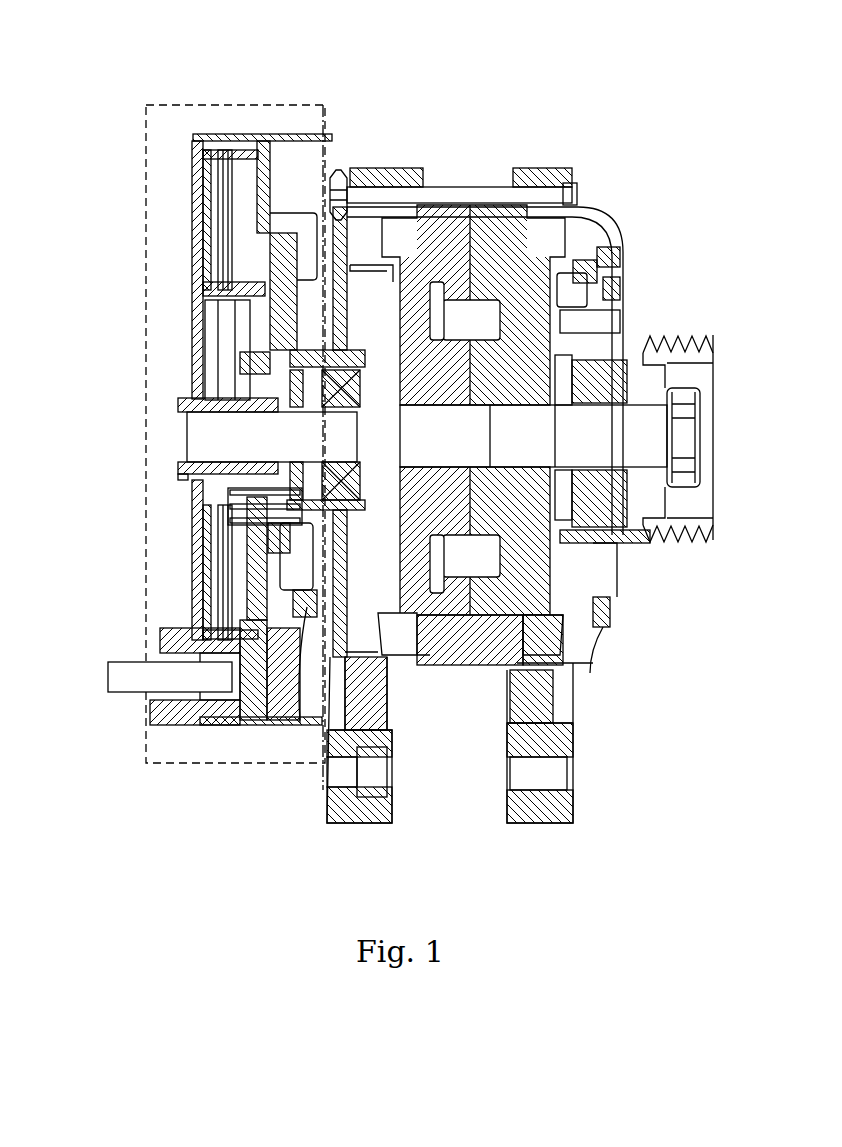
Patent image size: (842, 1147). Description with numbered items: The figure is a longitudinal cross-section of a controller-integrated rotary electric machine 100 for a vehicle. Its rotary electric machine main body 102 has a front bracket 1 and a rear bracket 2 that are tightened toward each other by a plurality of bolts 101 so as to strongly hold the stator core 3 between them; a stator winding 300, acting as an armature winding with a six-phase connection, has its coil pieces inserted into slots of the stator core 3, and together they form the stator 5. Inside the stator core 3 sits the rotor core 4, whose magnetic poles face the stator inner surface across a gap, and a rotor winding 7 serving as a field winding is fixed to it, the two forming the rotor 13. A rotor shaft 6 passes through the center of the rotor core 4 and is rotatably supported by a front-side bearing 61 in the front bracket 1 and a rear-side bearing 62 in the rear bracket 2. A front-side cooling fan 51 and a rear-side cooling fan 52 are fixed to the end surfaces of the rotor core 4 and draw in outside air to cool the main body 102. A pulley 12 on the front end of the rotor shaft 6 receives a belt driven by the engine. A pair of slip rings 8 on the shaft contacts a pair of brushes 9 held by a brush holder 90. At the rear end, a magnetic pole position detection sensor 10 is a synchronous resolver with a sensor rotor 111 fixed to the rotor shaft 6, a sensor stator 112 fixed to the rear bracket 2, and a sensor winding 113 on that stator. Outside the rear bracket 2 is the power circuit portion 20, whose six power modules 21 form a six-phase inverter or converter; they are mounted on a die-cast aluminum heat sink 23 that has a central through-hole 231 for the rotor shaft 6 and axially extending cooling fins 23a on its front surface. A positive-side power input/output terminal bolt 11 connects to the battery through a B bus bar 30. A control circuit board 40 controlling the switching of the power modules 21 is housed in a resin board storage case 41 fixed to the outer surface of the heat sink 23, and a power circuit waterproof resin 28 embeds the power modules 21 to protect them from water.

The controller-integrated rotary electric machine 100 is at (386, 80).
The power circuit portion 20 is at (241, 95).
The power circuit waterproof resin 28 is at (197, 150).
The board storage case 41 is at (230, 150).
The heat sink 23 is at (268, 138).
The cooling fins 23a is at (302, 212).
The control circuit board 40 is at (200, 178).
The rear-side cooling fan 52 is at (354, 182).
The rotary electric machine main body 102 is at (435, 152).
The bolts 101 is at (460, 188).
The rotor winding 7 is at (578, 165).
The rotor core 4 is at (590, 215).
The rotor 13 is at (634, 118).
The front-side cooling fan 51 is at (585, 262).
The rotor shaft 6 is at (612, 350).
The pulley 12 is at (690, 338).
The brush holder 90 is at (205, 288).
The brushes 9 is at (212, 330).
The rear-side bearing 62 is at (245, 368).
The through-hole 231 is at (200, 408).
The slip rings 8 is at (182, 440).
The sensor rotor 111 is at (232, 492).
The sensor stator 112 is at (232, 506).
The sensor winding 113 is at (232, 520).
The magnetic pole position detection sensor 10 is at (78, 482).
The power modules 21 is at (222, 560).
The B bus bar 30 is at (222, 590).
The positive-side power input/output terminal bolt 11 is at (132, 692).
The rear bracket 2 is at (303, 610).
The front-side bearing 61 is at (620, 535).
The front bracket 1 is at (605, 614).
The stator winding 300 is at (565, 660).
The stator core 3 is at (540, 650).
The stator 5 is at (656, 690).